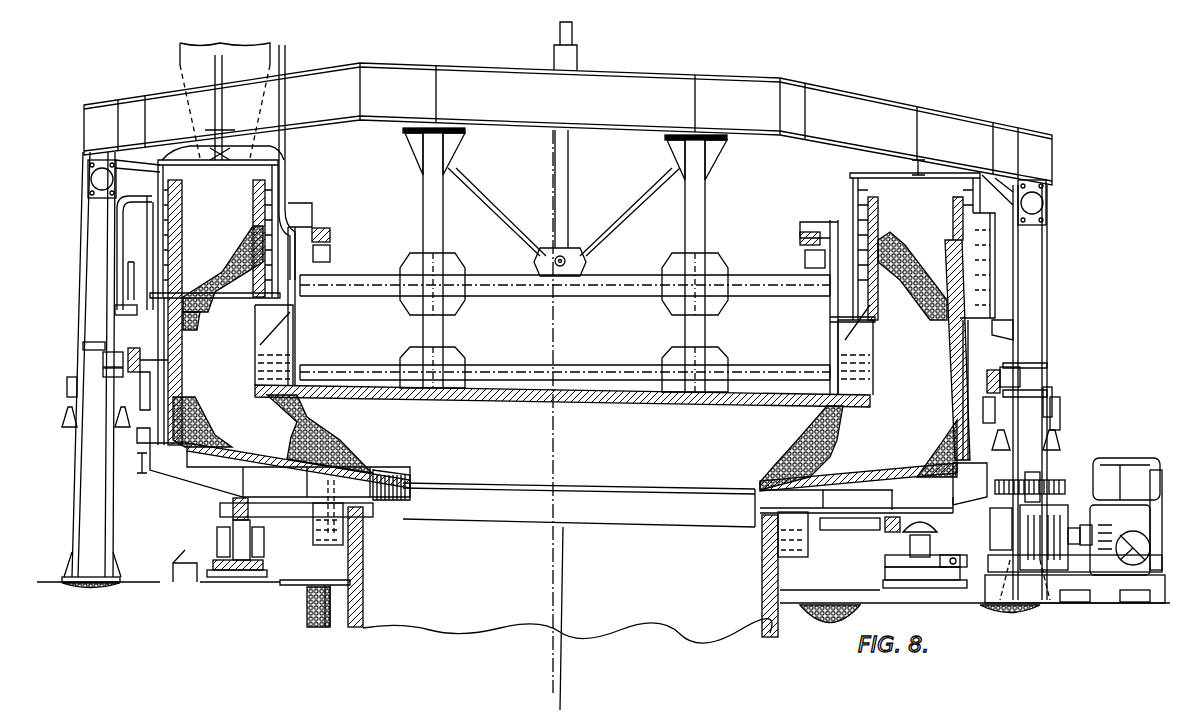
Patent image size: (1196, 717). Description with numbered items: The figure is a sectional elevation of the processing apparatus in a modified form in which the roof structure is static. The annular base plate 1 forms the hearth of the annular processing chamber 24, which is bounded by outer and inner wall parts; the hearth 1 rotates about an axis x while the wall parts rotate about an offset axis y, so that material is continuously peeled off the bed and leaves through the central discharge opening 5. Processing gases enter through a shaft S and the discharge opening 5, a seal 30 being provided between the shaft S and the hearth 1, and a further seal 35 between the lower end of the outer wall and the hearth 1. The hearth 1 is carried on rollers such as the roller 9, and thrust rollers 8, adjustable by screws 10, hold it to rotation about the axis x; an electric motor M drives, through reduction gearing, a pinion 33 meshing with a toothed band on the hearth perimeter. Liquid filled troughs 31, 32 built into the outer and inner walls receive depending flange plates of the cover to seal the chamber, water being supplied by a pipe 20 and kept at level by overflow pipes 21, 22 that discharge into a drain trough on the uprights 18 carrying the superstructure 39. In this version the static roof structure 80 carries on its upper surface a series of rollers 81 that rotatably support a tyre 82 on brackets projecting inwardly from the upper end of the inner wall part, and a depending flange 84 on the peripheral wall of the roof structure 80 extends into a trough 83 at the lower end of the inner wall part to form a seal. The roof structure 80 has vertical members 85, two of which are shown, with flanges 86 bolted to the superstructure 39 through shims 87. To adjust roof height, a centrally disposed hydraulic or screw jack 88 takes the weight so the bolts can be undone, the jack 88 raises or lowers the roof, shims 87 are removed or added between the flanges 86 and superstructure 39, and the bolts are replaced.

The superstructure 39 is at (608, 80).
The hydraulic or screw jack 88 is at (570, 160).
The vertical members 85 is at (432, 191).
The flanges 86 is at (448, 172).
The shims 87 is at (470, 135).
The static roof structure 80 is at (622, 358).
The liquid filled trough 31 is at (258, 282).
The liquid filled trough 32 is at (223, 278).
The tyre 82 is at (805, 233).
The rollers 81 is at (803, 266).
The trough 83 is at (860, 372).
The depending flange 84 is at (855, 345).
The pipe 20 is at (289, 160).
The annular base plate 1 is at (250, 462).
The annular processing chamber 24 is at (912, 316).
The uprights 18 is at (1052, 260).
The overflow pipe 22 is at (122, 218).
The overflow pipe 21 is at (126, 277).
The seal 35 is at (162, 452).
The roller 9 is at (232, 508).
The seal 30 is at (812, 545).
The shaft S is at (760, 570).
The central discharge opening 5 is at (608, 480).
The axis x is at (550, 672).
The axis y is at (565, 688).
The thrust rollers 8 is at (935, 527).
The screws 10 is at (975, 546).
The pinion 33 is at (1060, 485).
The electric motor M is at (1130, 470).